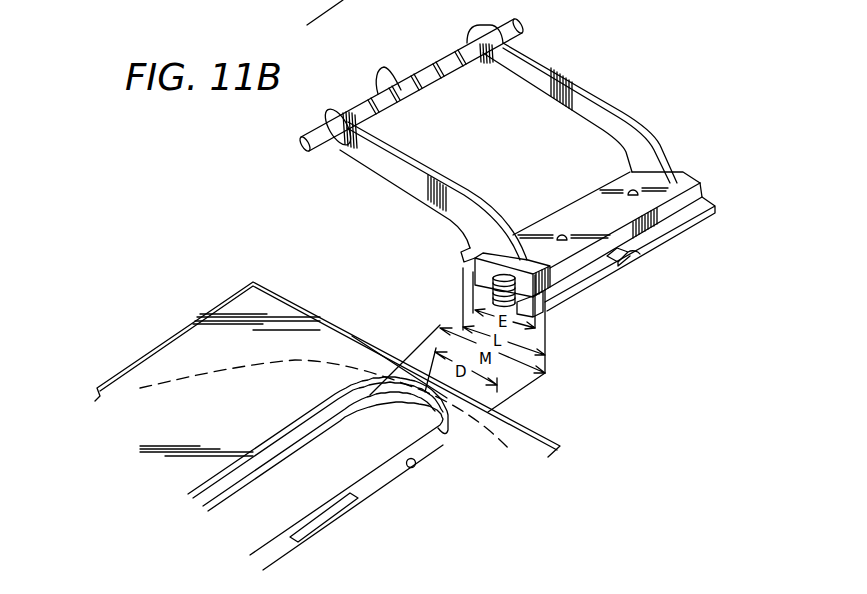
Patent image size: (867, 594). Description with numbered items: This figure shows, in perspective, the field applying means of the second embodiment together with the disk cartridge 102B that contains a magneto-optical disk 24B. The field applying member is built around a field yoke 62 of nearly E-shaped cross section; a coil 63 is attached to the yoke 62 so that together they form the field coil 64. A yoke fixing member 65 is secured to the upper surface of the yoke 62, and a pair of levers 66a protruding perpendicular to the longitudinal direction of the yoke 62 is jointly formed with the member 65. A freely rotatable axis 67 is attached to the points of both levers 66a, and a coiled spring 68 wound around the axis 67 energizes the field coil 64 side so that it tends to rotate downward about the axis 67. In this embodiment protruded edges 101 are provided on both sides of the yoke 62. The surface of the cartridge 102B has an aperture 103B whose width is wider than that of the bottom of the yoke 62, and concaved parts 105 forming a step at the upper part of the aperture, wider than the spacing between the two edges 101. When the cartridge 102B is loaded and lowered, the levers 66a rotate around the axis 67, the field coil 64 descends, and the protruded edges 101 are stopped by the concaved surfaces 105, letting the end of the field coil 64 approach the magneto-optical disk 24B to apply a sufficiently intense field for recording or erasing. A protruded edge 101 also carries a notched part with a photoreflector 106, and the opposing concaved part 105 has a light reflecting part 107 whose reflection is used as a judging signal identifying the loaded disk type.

The magneto-optical disk 24B is at (293, 360).
The field yoke 62 is at (490, 281).
The coil 63 is at (547, 313).
The field coil 64 is at (704, 170).
The yoke fixing member 65 is at (572, 217).
The lever 66a is at (415, 160).
The axis 67 is at (323, 146).
The coiled spring 68 is at (378, 72).
The protruded edge 101 is at (466, 268).
The disk cartridge 102B is at (202, 313).
The aperture 103B is at (307, 443).
The concaved part 105 is at (415, 468).
The photoreflector 106 is at (640, 253).
The light reflecting part 107 is at (348, 505).